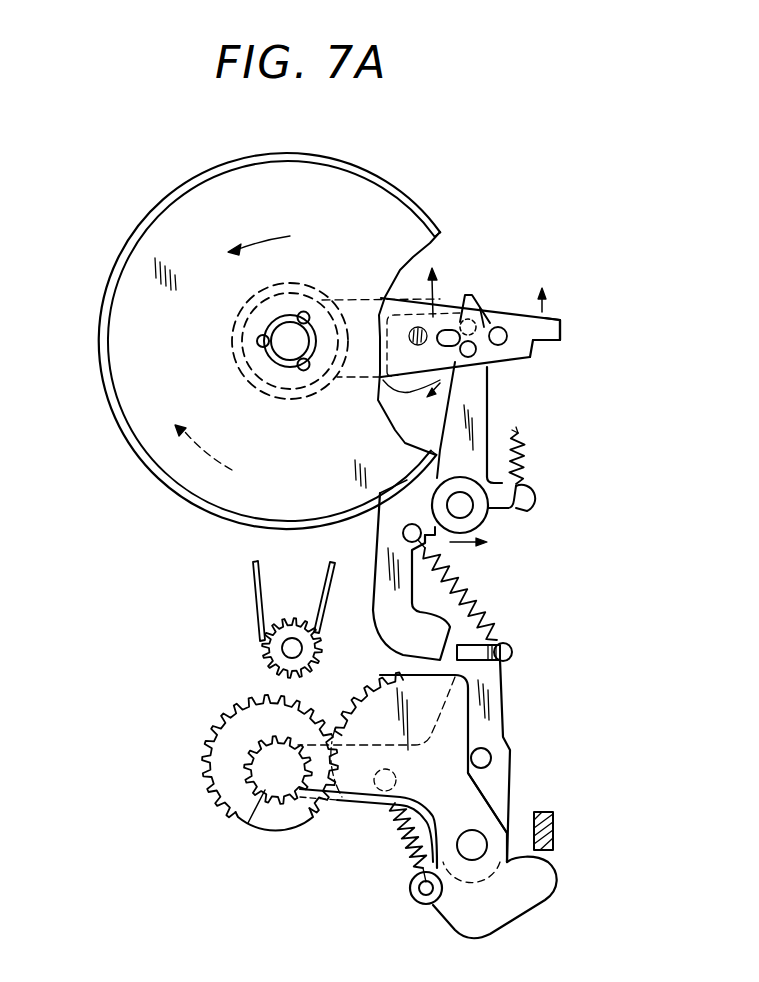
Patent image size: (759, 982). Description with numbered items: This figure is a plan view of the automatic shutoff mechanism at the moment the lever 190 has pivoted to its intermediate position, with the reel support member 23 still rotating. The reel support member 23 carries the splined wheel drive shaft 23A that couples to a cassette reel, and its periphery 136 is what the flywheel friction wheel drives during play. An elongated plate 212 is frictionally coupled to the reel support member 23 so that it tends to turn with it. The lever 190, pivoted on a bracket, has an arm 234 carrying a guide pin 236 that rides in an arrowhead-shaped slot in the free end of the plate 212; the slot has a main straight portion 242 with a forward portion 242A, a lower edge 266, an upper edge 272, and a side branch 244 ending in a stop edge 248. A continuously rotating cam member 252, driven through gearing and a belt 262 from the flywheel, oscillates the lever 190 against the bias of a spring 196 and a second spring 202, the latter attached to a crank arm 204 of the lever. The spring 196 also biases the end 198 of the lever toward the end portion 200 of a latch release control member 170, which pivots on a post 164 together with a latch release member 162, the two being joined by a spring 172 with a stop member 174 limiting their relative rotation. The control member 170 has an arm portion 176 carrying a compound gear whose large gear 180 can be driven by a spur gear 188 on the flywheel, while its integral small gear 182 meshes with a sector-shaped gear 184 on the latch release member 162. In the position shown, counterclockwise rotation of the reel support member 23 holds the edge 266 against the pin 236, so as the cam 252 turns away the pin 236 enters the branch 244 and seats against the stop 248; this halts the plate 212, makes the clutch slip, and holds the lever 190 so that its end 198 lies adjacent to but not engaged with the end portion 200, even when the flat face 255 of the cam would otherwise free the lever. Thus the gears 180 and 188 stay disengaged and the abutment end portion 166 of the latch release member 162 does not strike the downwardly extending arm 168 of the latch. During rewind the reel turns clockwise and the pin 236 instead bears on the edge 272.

The reel support member 23 is at (340, 191).
The wheel drive shaft 23A is at (287, 320).
The periphery of reel support member 136 is at (300, 158).
The elongated plate 212 is at (398, 390).
The stop edge 248 is at (419, 408).
The cam member 252 is at (447, 328).
The flat face 255 is at (412, 317).
The guide pin 236 is at (482, 325).
The slot edge 272 is at (527, 312).
The forward portion of slot 242A is at (548, 318).
The main straight portion of slot 242 is at (533, 346).
The slot edge 266 is at (512, 364).
The side branch 244 is at (503, 378).
The arm of lever 234 is at (480, 403).
The lever 190 is at (470, 452).
The second spring 202 is at (520, 470).
The crank arm 204 is at (537, 503).
The spring 196 is at (470, 600).
The end of lever 198 is at (428, 643).
The end portion of control member 200 is at (478, 660).
The latch release control member 170 is at (490, 730).
The stop member 174 is at (482, 758).
The latch release member 162 is at (468, 797).
The post 164 is at (470, 840).
The downwardly extending arm of latch member 168 is at (553, 829).
The abutment end portion 166 is at (533, 873).
The spring 172 is at (397, 832).
The arm portion 176 is at (358, 806).
The large diameter gear 180 is at (210, 783).
The small diameter spur gear 182 is at (248, 823).
The sector-shaped gear 184 is at (357, 695).
The spur gear 188 is at (265, 652).
The belt 262 is at (253, 578).